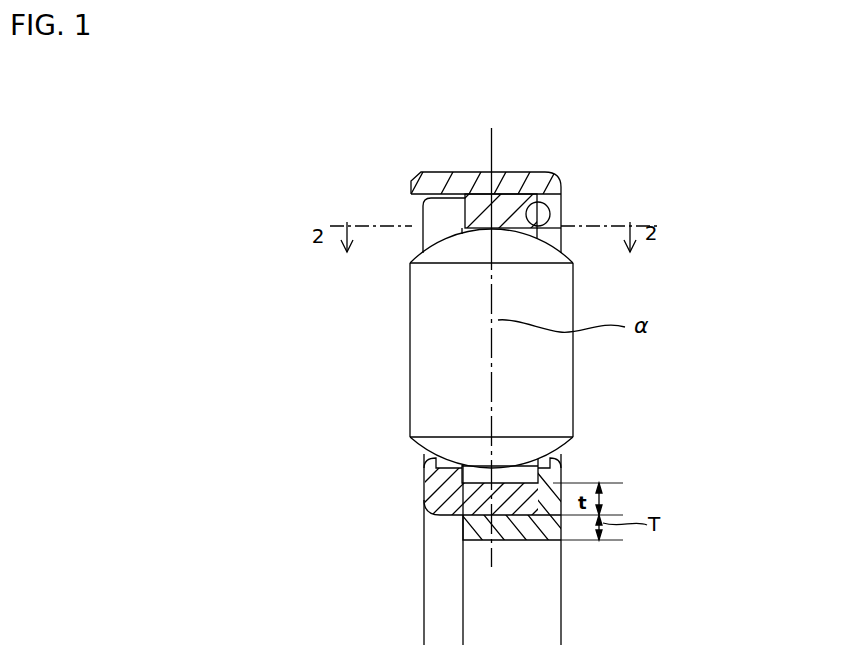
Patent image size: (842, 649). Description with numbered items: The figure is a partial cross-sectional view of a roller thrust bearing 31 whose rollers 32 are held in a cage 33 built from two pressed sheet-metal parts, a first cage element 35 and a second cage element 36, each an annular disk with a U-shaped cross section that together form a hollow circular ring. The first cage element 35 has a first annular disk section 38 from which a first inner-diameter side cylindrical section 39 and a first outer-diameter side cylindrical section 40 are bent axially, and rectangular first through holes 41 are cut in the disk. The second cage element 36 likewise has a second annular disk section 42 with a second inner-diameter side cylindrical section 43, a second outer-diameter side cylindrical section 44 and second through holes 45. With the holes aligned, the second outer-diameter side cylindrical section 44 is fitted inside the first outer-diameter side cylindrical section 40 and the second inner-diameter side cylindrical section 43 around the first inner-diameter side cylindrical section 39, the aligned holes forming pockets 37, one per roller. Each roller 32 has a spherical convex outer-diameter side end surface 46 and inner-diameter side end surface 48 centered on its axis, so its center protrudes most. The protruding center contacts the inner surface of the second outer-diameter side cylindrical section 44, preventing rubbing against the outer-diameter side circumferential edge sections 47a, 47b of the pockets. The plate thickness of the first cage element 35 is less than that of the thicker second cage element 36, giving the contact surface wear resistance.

The roller thrust bearing 31 is at (594, 302).
The rollers 32 is at (558, 378).
The cage 33 is at (522, 172).
The first cage element 35 is at (550, 213).
The second cage element 36 is at (436, 500).
The pockets 37 is at (562, 455).
The first annular disk section 38 is at (563, 490).
The first inner-diameter side cylindrical section 39 is at (505, 530).
The first outer-diameter side cylindrical section 40 is at (446, 183).
The first through holes 41 is at (562, 242).
The second annular disk section 42 is at (432, 477).
The second inner-diameter side cylindrical section 43 is at (466, 541).
The second outer-diameter side cylindrical section 44 is at (508, 190).
The second through holes 45 is at (423, 456).
The outer-diameter side end surface 46 is at (420, 243).
The outer-diameter side circumferential edge section 47a is at (562, 188).
The outer-diameter side circumferential edge section 47b is at (428, 199).
The inner-diameter side end surface 48 is at (550, 462).